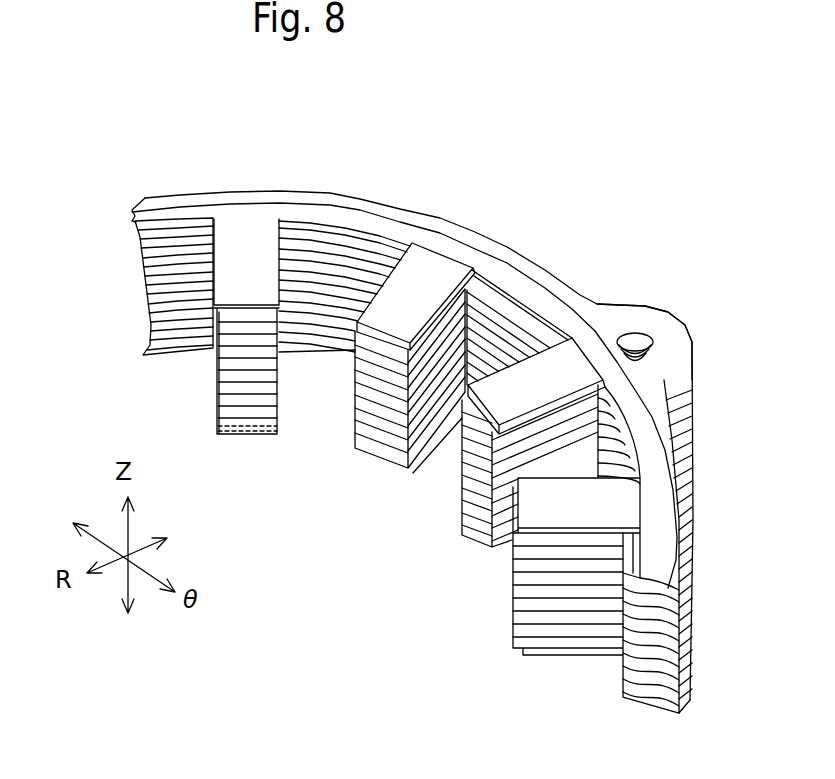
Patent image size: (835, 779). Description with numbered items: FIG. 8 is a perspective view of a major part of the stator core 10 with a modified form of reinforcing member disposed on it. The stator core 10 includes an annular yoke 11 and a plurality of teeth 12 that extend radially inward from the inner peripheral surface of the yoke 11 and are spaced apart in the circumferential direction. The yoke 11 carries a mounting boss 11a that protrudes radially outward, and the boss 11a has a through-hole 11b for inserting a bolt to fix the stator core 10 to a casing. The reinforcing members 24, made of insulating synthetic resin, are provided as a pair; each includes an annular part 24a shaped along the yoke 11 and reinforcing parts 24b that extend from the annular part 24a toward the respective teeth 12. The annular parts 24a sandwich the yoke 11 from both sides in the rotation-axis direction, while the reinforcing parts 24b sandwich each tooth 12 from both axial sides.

The stator core 10 is at (132, 292).
The annular yoke 11 is at (148, 200).
The mounting boss 11a is at (660, 317).
The through-hole 11b is at (640, 341).
The tooth 12 is at (354, 446).
The reinforcing member 24 is at (408, 200).
The annular part 24a is at (330, 220).
The reinforcing part 24b is at (233, 270).